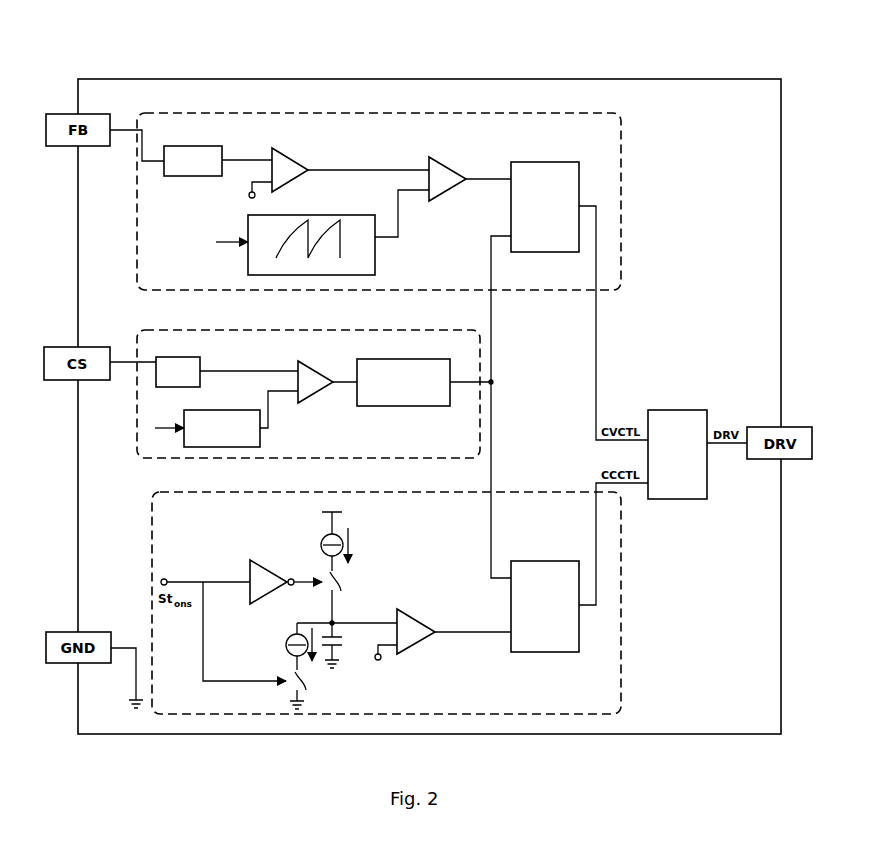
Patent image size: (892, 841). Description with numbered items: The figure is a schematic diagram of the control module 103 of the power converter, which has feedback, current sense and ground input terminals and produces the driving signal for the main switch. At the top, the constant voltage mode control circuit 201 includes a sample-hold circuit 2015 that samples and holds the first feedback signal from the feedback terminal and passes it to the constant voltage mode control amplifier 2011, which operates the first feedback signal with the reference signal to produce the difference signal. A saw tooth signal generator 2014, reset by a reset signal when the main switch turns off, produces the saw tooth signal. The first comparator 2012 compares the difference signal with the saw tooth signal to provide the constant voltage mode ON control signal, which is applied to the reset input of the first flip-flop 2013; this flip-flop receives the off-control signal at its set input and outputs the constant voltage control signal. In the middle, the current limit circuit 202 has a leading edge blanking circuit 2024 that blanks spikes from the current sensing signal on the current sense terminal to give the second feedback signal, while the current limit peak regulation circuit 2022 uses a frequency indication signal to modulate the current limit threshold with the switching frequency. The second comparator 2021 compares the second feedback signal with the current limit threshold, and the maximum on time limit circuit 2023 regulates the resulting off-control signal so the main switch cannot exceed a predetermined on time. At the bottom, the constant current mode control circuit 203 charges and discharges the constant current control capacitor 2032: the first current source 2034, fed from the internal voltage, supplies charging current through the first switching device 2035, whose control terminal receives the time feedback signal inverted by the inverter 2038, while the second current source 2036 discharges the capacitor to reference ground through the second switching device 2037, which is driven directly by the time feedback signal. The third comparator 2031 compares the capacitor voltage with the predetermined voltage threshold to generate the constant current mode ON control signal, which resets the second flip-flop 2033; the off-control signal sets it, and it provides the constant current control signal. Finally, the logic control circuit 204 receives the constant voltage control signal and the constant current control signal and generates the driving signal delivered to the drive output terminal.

The control module 103 is at (86, 44).
The constant voltage mode control circuit 201 is at (622, 178).
The current limit circuit 202 is at (424, 330).
The constant current mode control circuit 203 is at (621, 645).
The logic control circuit 204 is at (677, 454).
The constant voltage mode control amplifier 2011 is at (298, 164).
The first comparator 2012 is at (447, 166).
The first flip-flop 2013 is at (545, 207).
The saw tooth signal generator 2014 is at (322, 216).
The sample-hold circuit 2015 is at (189, 146).
The second comparator 2021 is at (308, 368).
The current limit peak regulation circuit 2022 is at (207, 410).
The maximum on time limit circuit 2023 is at (414, 406).
The leading edge blanking circuit 2024 is at (178, 357).
The third comparator 2031 is at (422, 620).
The constant current control capacitor 2032 is at (343, 640).
The second flip-flop 2033 is at (545, 606).
The first current source 2034 is at (321, 552).
The first switching device 2035 is at (353, 597).
The second current source 2036 is at (286, 648).
The second switching device 2037 is at (305, 684).
The inverter 2038 is at (250, 570).